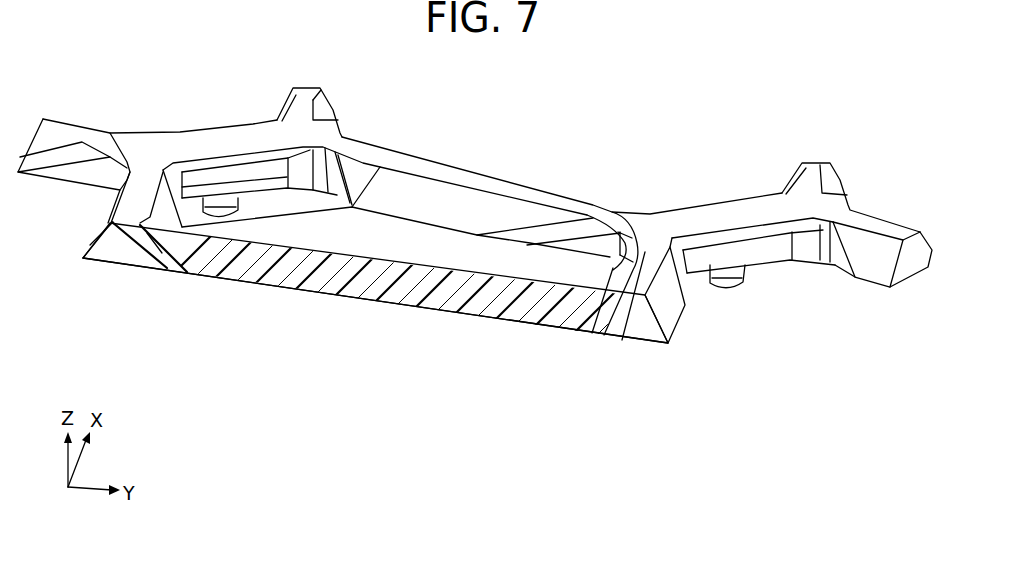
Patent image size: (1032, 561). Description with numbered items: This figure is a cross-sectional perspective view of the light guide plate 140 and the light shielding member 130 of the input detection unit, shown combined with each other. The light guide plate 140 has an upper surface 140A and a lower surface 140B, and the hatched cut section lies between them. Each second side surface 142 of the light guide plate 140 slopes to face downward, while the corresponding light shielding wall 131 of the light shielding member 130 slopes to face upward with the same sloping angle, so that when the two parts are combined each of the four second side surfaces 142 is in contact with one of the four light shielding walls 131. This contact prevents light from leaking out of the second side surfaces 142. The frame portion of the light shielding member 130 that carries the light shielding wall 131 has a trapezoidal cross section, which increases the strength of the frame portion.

The light shielding member 130 is at (641, 178).
The light shielding wall 131 is at (162, 253).
The second side surface 142 is at (140, 247).
The light guide plate 140 is at (375, 303).
The upper surface 140A is at (447, 254).
The lower surface 140B is at (306, 296).